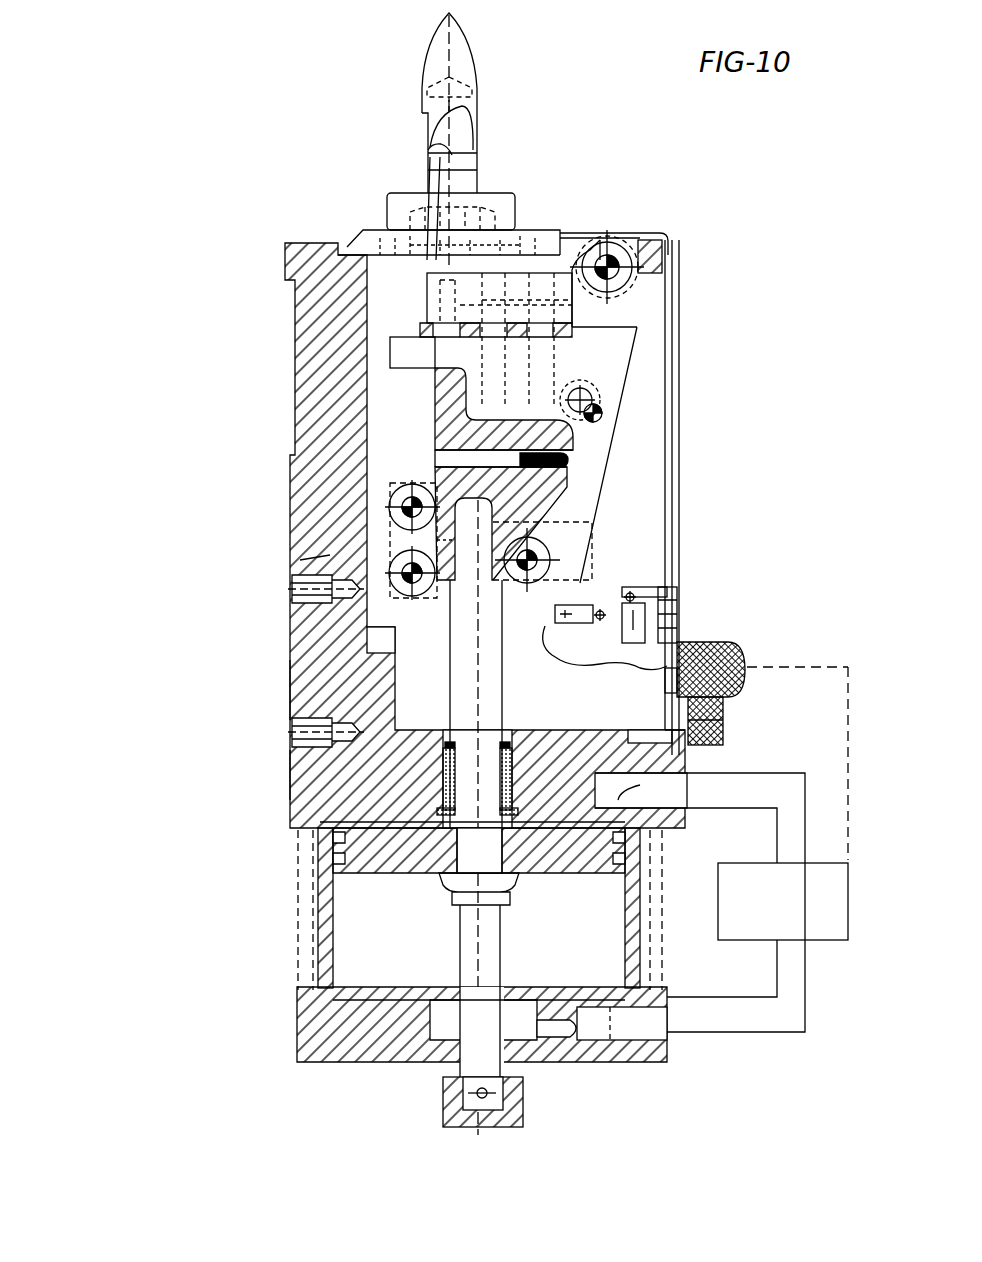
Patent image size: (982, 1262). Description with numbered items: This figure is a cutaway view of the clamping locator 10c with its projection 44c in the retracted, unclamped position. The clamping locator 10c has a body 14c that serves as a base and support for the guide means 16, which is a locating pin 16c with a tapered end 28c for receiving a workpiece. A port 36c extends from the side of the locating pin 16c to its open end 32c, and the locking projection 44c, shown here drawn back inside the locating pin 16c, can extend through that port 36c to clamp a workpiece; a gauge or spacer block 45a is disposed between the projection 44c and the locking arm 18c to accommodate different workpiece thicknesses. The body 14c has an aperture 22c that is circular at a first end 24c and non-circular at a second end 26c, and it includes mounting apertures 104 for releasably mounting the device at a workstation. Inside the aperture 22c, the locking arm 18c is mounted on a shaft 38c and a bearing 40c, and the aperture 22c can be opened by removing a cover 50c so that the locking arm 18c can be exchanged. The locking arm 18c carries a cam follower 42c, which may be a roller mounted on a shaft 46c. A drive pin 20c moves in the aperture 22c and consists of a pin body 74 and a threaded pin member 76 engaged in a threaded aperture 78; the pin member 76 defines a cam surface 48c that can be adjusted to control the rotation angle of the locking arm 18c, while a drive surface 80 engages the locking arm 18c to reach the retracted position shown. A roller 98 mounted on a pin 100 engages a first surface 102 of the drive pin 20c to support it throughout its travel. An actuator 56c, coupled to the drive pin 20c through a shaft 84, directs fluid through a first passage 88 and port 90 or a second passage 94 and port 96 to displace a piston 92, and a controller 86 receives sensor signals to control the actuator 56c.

The clamping locator 10c is at (146, 103).
The guide means 16 is at (376, 35).
The locating pin 16c is at (432, 45).
The tapered end 28c is at (466, 16).
The port 36c is at (428, 123).
The projection 44c is at (430, 150).
The second end 26c is at (270, 284).
The open end 32c is at (423, 253).
The shaft 38c is at (626, 240).
The bearing 40c is at (622, 278).
The spacer block 45a is at (578, 327).
The locking arm 18c is at (625, 357).
The cover 50c is at (682, 452).
The drive surface 80 is at (390, 348).
The pin body 74 is at (435, 378).
The drive pin 20c is at (414, 431).
The pin member 76 is at (435, 460).
The threaded aperture 78 is at (572, 448).
The roller 98 is at (410, 503).
The cam surface 48c is at (400, 518).
The pin 100 is at (437, 545).
The first surface 102 is at (330, 557).
The mounting apertures 104 is at (300, 592).
The cam follower 42c is at (548, 572).
The shaft 46c is at (545, 560).
The controller 86 is at (732, 650).
The aperture 22c is at (300, 694).
The first end 24c is at (282, 774).
The body 14c is at (300, 793).
The first passage 88 is at (722, 783).
The port 90 is at (618, 805).
The actuator 56c is at (830, 920).
The shaft 84 is at (330, 845).
The piston 92 is at (322, 912).
The second passage 94 is at (700, 1032).
The port 96 is at (582, 1037).